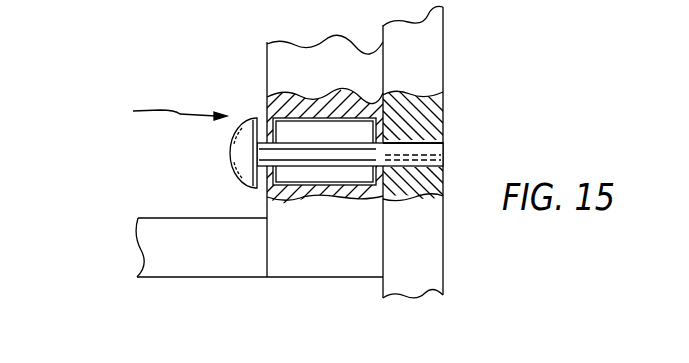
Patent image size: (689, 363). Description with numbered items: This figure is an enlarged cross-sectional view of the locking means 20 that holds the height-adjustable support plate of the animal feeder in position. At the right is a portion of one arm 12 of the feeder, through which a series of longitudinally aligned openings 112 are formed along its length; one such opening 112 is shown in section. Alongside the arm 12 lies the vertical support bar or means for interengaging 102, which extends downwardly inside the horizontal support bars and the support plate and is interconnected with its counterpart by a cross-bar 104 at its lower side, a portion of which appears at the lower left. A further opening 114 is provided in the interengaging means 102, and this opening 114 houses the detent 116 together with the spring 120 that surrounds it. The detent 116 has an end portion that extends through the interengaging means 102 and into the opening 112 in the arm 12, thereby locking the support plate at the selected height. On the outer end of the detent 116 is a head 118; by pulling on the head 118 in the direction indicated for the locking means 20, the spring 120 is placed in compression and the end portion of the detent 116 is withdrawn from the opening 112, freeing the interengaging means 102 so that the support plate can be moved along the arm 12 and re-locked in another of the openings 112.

The arm 12 is at (423, 75).
The locking means 20 is at (159, 123).
The means for interengaging 102 is at (283, 70).
The cross-bar 104 is at (155, 236).
The openings 112 is at (436, 122).
The opening 114 is at (362, 104).
The detent 116 is at (435, 150).
The head 118 is at (238, 151).
The spring 120 is at (353, 124).